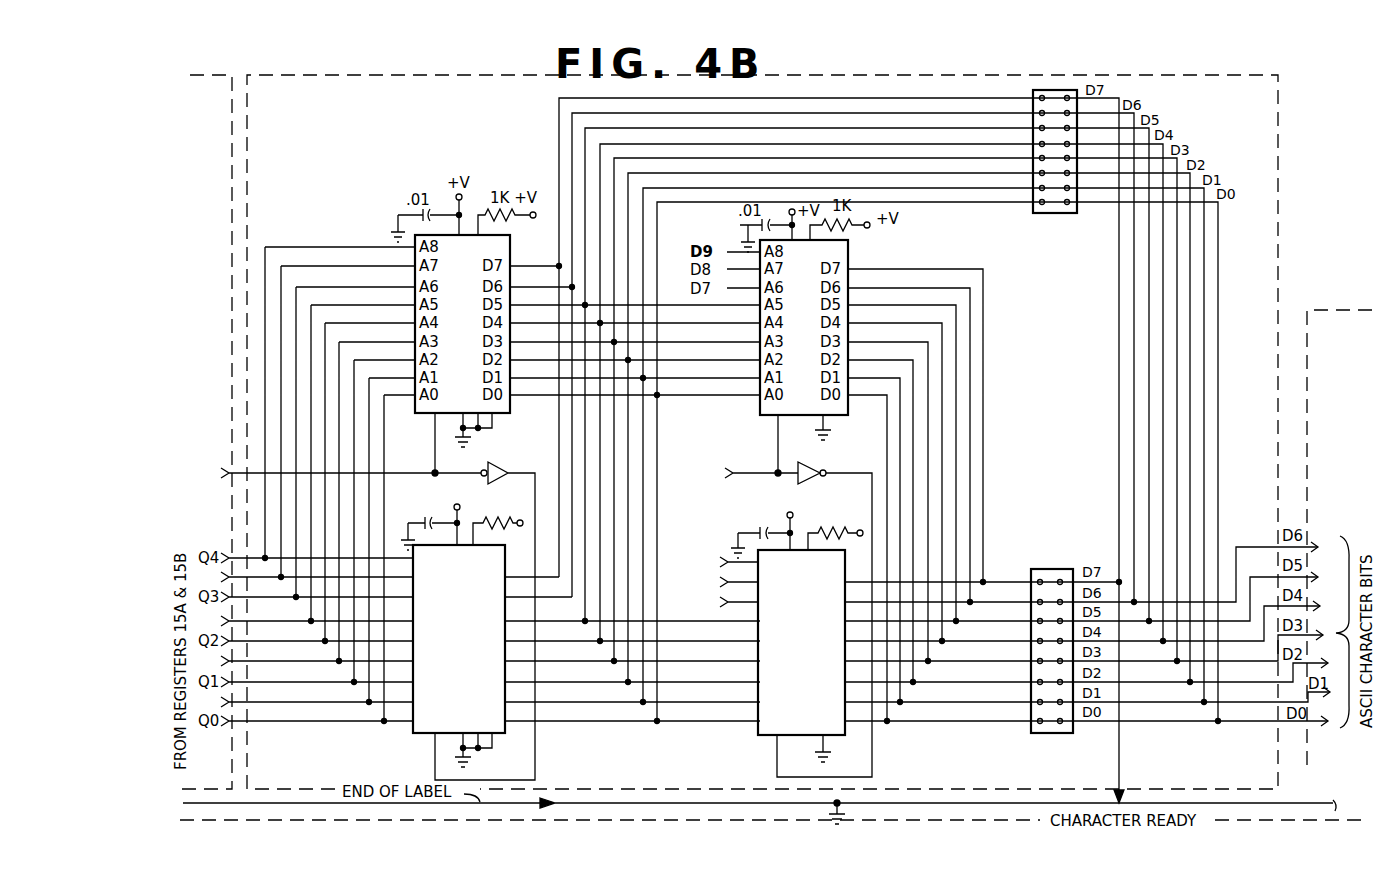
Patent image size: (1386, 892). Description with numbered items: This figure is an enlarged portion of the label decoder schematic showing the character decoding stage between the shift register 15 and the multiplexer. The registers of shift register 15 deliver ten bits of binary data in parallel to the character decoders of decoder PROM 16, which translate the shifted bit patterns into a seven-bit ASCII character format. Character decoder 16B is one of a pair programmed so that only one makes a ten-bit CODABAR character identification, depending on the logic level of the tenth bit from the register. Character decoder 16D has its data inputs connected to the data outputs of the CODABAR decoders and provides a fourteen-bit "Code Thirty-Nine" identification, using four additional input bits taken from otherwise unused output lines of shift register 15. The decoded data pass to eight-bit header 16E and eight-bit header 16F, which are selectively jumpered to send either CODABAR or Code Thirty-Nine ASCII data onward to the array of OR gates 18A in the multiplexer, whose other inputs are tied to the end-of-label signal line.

The shift register 15 is at (216, 104).
The decoder PROM 16 is at (275, 104).
The character decoder 16B is at (467, 630).
The character decoder 16D is at (810, 630).
The eight-bit header 16E is at (1051, 188).
The eight-bit header 16F is at (1040, 619).
The OR gates 18A is at (1358, 338).